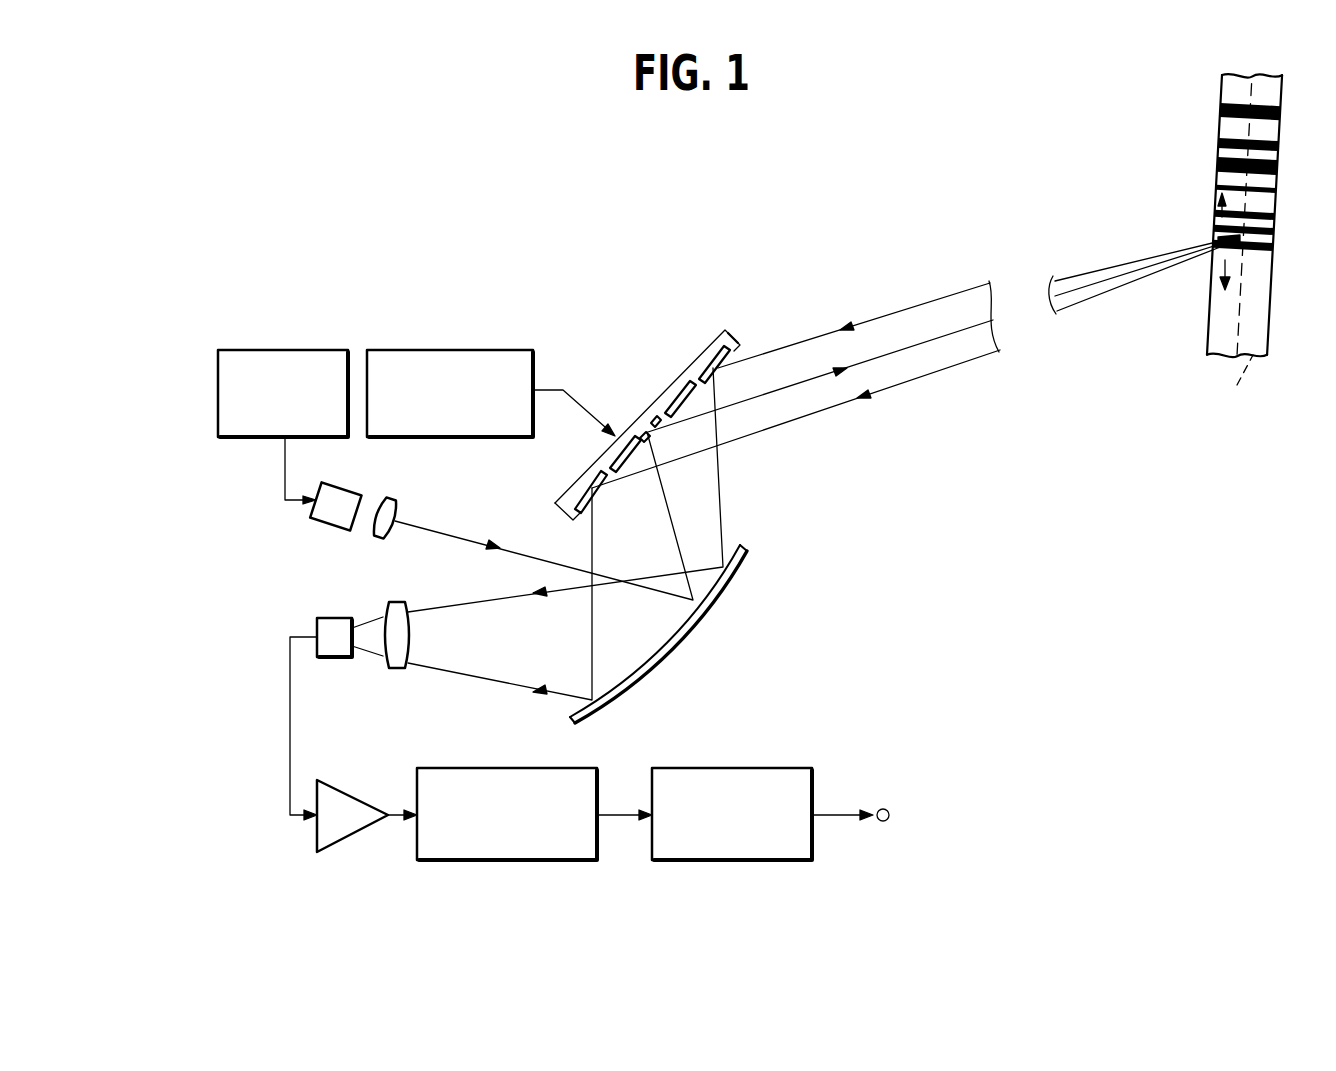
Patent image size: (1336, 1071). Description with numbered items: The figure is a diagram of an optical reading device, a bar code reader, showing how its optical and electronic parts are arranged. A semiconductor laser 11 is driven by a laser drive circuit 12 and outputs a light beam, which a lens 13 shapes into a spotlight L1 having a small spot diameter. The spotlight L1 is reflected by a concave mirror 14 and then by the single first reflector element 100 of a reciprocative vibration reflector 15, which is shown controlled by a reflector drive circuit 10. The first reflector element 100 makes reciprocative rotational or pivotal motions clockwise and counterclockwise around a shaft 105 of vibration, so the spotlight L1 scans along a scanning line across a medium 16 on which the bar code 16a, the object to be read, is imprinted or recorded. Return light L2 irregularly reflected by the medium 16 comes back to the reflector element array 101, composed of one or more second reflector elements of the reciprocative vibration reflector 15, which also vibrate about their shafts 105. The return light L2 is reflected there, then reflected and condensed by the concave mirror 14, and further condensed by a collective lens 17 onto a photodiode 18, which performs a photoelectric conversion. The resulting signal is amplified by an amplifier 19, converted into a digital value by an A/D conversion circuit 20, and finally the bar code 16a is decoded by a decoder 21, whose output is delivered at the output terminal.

The reflector drive circuit 10 is at (466, 350).
The semiconductor laser 11 is at (325, 526).
The laser drive circuit 12 is at (283, 350).
The lens 13 is at (392, 500).
The concave mirror 14 is at (688, 627).
The reciprocative vibration reflector 15 is at (653, 364).
The medium 16 is at (1176, 252).
The bar code 16a is at (1222, 112).
The collective lens 17 is at (395, 668).
The photodiode 18 is at (337, 618).
The amplifier 19 is at (343, 840).
The analog-to-digital (A/D) conversion circuit 20 is at (533, 862).
The decoder 21 is at (742, 862).
The first reflector element 100 is at (650, 418).
The reflector element array 101 is at (735, 334).
The shaft of vibration 105 is at (647, 430).
The spotlight L1 is at (865, 358).
The return light L2 is at (932, 302).